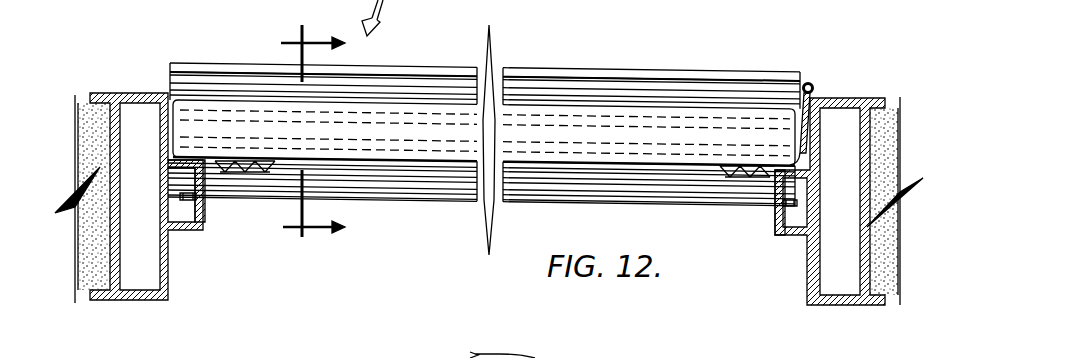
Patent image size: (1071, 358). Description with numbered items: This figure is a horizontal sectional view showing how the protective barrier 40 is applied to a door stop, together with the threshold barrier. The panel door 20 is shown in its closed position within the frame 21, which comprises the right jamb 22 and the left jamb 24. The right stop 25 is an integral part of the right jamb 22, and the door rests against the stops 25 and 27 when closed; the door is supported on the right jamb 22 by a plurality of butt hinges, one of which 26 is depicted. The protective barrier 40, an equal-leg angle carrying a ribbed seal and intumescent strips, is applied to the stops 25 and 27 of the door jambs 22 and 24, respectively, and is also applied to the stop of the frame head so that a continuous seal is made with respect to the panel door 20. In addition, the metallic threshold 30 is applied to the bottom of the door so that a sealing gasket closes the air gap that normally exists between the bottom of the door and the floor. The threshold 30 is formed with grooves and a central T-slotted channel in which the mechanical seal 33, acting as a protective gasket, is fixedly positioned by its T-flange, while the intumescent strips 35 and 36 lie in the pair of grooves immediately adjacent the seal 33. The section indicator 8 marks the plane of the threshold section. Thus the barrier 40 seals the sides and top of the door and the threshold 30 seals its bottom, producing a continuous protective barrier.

The section line 8- 8 is at (308, 134).
The panel door 20 is at (600, 160).
The frame 21 is at (800, 266).
The right jamb 22 is at (853, 98).
The left jamb 24 is at (110, 93).
The right stop 25 is at (782, 232).
The butt hinge 26 is at (813, 84).
The stop 27 is at (190, 232).
The metallic threshold 30 is at (680, 70).
The mechanical seal 33 is at (432, 138).
The intumescent strip 35 is at (395, 118).
The intumescent strip 36 is at (472, 152).
The protective barrier 40 is at (263, 173).